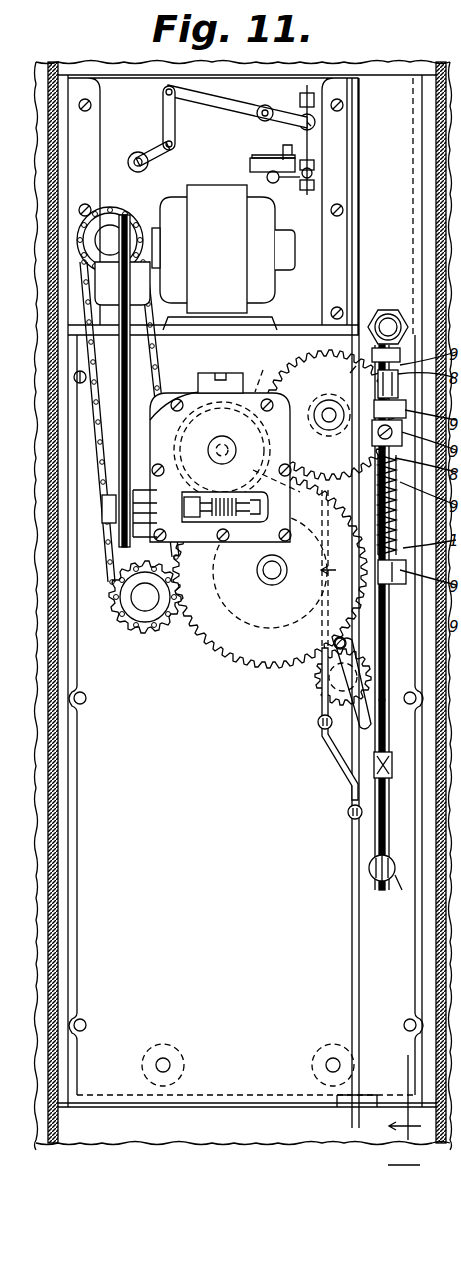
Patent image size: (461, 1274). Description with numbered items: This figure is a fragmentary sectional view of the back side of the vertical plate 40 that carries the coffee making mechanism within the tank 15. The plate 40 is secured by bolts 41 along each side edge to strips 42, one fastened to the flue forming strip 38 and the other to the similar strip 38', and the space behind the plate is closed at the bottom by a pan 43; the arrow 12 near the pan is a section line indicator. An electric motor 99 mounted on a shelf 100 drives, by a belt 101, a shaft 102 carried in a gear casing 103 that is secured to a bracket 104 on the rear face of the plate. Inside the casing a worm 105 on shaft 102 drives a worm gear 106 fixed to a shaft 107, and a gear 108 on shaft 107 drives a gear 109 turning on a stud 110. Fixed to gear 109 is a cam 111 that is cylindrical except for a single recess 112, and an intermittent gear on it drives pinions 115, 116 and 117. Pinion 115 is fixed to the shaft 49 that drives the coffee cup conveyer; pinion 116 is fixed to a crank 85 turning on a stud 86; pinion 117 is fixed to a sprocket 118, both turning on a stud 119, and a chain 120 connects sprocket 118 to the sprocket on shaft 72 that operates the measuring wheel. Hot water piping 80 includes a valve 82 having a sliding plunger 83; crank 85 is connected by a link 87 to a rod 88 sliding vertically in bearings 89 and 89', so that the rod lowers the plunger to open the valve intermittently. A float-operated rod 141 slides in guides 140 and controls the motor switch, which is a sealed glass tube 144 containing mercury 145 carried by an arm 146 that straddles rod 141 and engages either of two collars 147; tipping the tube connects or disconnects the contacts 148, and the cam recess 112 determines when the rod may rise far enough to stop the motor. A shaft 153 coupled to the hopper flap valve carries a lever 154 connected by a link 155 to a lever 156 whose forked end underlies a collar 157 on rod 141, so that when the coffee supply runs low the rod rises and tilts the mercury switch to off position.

The direction arrow 12 is at (404, 1110).
The tank 15 is at (40, 905).
The flue forming strip 38 is at (254, 602).
The flue forming strip 38' is at (407, 591).
The vertical plate 40 is at (320, 1058).
The bolts 41 is at (72, 378).
The strips 42 is at (412, 1055).
The pan 43 is at (222, 1107).
The shaft 49 is at (325, 413).
The shaft 72 is at (104, 243).
The piping 80 is at (389, 311).
The valve 82 is at (383, 310).
The sliding plunger 83 is at (368, 548).
The crank 85 is at (336, 650).
The stud 86 is at (345, 665).
The link 87 is at (330, 745).
The rod 88 is at (378, 835).
The bearing 89 is at (385, 886).
The bearing 89' is at (339, 380).
The electric motor 99 is at (223, 249).
The shelf 100 is at (210, 326).
The belt 101 is at (120, 292).
The shaft 102 is at (102, 504).
The gear casing 103 is at (190, 393).
The bracket 104 is at (213, 373).
The worm 105 is at (228, 524).
The worm gear 106 is at (270, 373).
The shaft 107 is at (230, 438).
The gear 108 is at (294, 493).
The gear 109 is at (225, 657).
The stud 110 is at (268, 582).
The cam 111 is at (238, 641).
The recess 112 is at (344, 573).
The pinion 115 is at (332, 340).
The pinion 116 is at (318, 676).
The pinion 117 is at (110, 563).
The sprocket 118 is at (125, 616).
The stud 119 is at (145, 604).
The chain 120 is at (96, 441).
The guides 140 is at (318, 725).
The rod 141 is at (322, 236).
The sealed glass tube 144 is at (257, 158).
The mercury 145 is at (250, 165).
The arm 146 is at (274, 183).
The collars 147 is at (314, 185).
The contacts 148 is at (290, 136).
The shaft 153 is at (135, 154).
The lever 154 is at (156, 147).
The link 155 is at (165, 100).
The lever 156 is at (206, 98).
The collar 157 is at (300, 98).